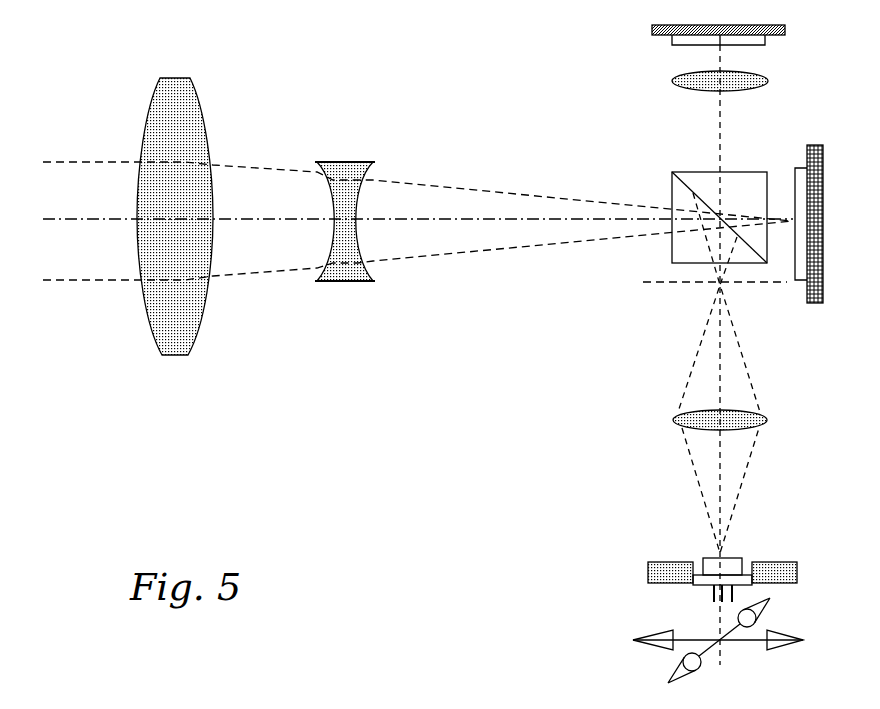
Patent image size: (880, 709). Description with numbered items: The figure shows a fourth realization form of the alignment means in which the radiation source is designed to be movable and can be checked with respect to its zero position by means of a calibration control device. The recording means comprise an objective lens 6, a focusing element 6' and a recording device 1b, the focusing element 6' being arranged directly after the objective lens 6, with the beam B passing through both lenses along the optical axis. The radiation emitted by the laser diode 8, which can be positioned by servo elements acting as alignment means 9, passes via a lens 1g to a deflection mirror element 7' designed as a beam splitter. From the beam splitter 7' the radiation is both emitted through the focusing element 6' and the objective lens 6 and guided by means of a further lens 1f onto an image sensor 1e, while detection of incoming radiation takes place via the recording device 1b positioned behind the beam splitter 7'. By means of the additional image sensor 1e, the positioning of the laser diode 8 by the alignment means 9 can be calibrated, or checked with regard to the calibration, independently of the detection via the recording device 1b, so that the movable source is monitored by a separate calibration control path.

The light beam B is at (418, 221).
The objective lens 6 is at (153, 271).
The focusing element 6' is at (405, 289).
The image sensor 1e is at (698, 40).
The further lens 1f is at (703, 87).
The deflection mirror element 7' is at (643, 237).
The recording device 1b is at (808, 245).
The lens 1g is at (700, 427).
The laser diode 8 is at (715, 568).
The alignment means 9 is at (657, 582).